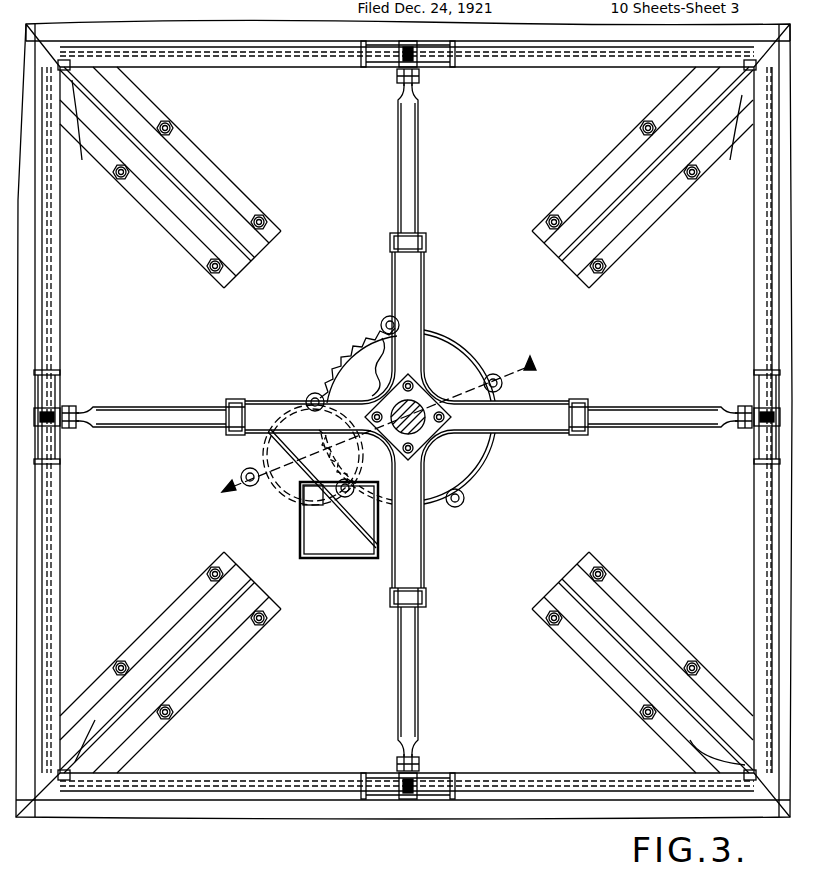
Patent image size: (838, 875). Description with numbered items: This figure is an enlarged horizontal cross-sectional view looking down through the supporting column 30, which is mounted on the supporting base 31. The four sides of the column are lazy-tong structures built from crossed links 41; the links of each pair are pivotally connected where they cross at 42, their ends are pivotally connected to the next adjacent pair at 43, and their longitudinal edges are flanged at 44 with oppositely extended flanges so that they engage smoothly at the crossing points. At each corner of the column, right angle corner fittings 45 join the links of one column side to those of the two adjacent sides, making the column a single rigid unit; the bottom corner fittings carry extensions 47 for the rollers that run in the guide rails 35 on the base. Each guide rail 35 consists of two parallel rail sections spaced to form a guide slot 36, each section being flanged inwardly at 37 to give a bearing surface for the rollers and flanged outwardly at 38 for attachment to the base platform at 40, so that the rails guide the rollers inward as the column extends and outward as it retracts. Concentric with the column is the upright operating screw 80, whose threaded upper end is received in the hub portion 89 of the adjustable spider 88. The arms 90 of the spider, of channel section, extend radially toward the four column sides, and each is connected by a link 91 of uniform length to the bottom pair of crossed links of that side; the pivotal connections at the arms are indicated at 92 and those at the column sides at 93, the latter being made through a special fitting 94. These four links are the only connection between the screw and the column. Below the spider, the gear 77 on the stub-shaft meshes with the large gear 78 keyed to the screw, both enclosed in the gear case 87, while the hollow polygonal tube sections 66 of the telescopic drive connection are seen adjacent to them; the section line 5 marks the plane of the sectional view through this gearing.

The section line 5- 5 is at (372, 412).
The supporting column 30 is at (293, 68).
The supporting base 31 is at (631, 510).
The guide rails 35 is at (232, 197).
The guide slots 36 is at (250, 250).
The inwardly extending flanges 37 is at (175, 163).
The outwardly extending flanges 38 is at (174, 130).
The rail attachment 40 is at (278, 230).
The links 41 is at (557, 50).
The intermediate pivotal connection 42 is at (411, 46).
The end pivotal connection 43 is at (70, 72).
The link flanges 44 is at (500, 56).
The right angle corner fittings 45 is at (50, 55).
The extensions 47 is at (72, 80).
The hollow polygonal tube sections 66 is at (300, 510).
The gear 77 is at (270, 498).
The large gear 78 is at (360, 380).
The operating screw 80 is at (420, 405).
The gear case 87 is at (486, 455).
The adjustable spider 88 is at (437, 370).
The hub portion 89 is at (432, 446).
The spider arms 90 is at (428, 268).
The links 91 is at (416, 102).
The pivotal connections 92 is at (428, 243).
The pivotal connections 93 is at (396, 74).
The special fitting 94 is at (400, 86).